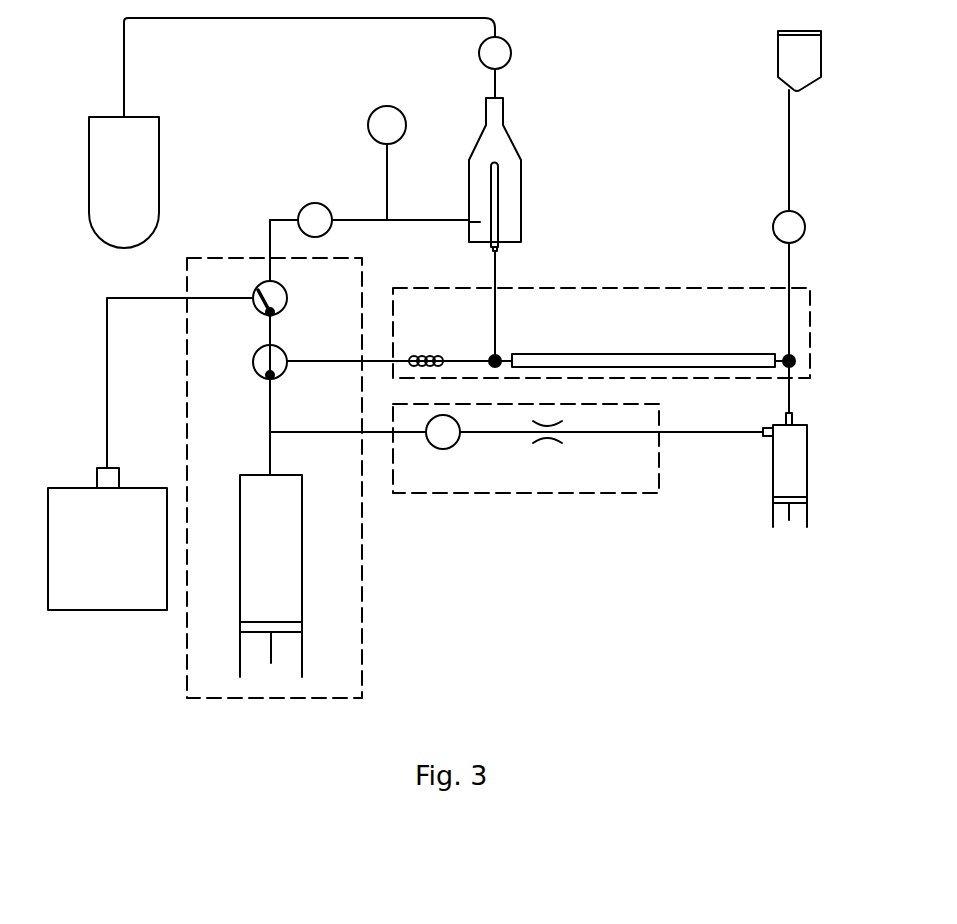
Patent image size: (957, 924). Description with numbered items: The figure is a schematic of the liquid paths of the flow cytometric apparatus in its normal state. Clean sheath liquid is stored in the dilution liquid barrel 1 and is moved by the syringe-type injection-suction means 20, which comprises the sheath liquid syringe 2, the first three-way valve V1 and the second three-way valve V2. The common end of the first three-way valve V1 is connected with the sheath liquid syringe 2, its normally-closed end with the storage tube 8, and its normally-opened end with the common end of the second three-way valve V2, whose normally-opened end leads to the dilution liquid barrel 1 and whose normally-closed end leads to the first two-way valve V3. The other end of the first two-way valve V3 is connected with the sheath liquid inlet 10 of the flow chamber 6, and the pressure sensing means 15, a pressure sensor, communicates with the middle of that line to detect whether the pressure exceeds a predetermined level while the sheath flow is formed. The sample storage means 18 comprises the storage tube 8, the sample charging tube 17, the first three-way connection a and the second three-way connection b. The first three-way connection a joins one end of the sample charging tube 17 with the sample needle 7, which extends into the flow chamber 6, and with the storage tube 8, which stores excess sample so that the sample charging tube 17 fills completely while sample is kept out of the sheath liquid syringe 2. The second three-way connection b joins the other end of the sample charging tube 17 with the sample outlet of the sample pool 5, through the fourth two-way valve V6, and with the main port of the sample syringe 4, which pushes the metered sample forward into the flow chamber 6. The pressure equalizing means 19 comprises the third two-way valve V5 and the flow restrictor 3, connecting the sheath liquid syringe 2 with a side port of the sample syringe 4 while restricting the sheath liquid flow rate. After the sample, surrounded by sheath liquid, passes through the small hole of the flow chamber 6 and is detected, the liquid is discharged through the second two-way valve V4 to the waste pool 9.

The dilution liquid barrel 1 is at (107, 539).
The sheath liquid syringe 2 is at (271, 576).
The flow restrictor 3 is at (547, 445).
The sample syringe 4 is at (785, 470).
The sample pool 5 is at (799, 61).
The flow chamber 6 is at (493, 117).
The sample needle 7 is at (500, 178).
The storage tube 8 is at (420, 355).
The waste pool 9 is at (124, 182).
The sheath liquid inlet 10 is at (469, 222).
The pressure sensing means 15 is at (378, 110).
The sample charging tube 17 is at (617, 354).
The sample storage means 18 is at (570, 287).
The pressure equalizing means 19 is at (510, 493).
The syringe-type injection-suction means 20 is at (362, 636).
The first three-way valve V1 is at (257, 370).
The second three-way valve V2 is at (283, 298).
The first normally-closed two-way valve V3 is at (304, 207).
The second normally-closed two-way valve V4 is at (476, 67).
The third normally-closed two-way valve V5 is at (443, 451).
The fourth normally-closed two-way valve V6 is at (771, 226).
The first three-way connection a is at (498, 357).
The second three-way connection b is at (785, 356).